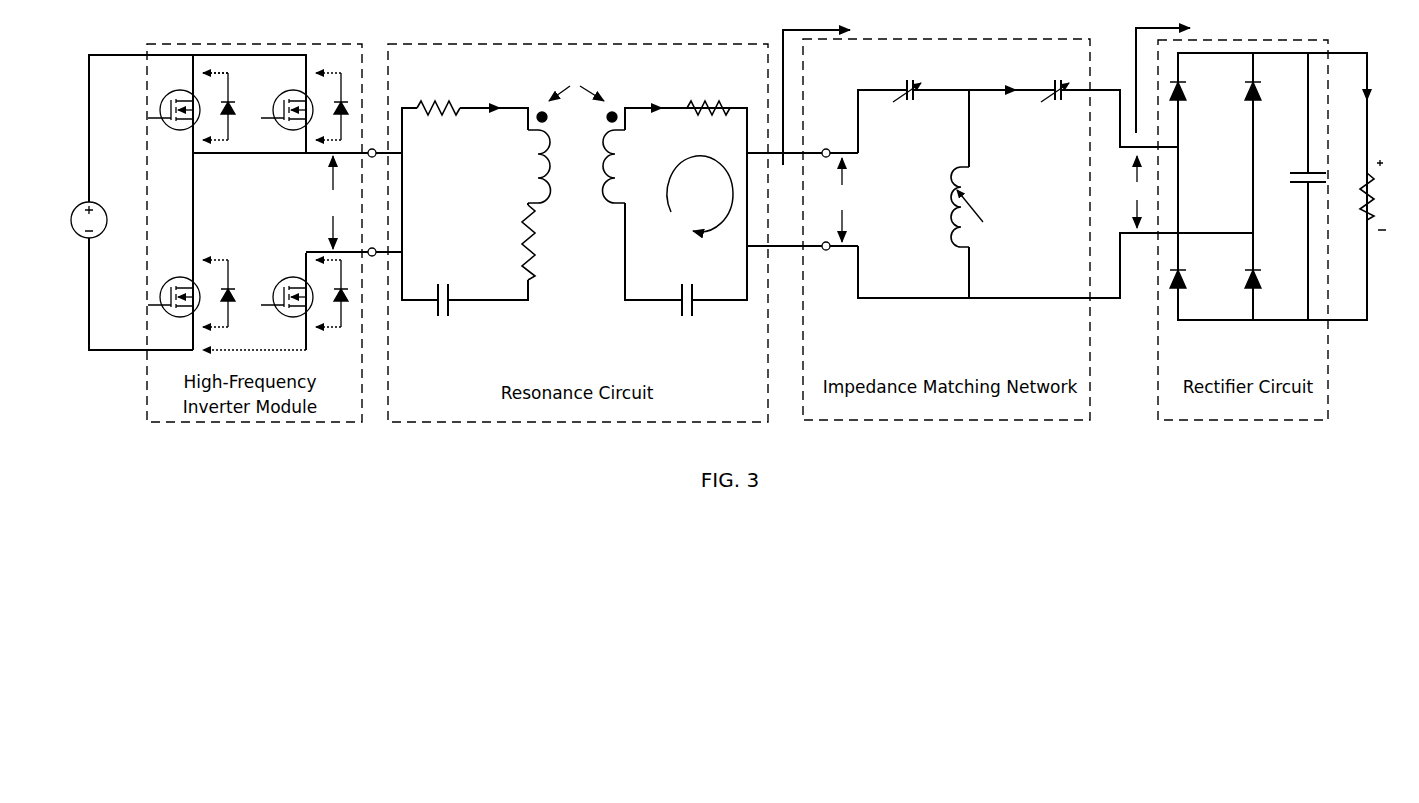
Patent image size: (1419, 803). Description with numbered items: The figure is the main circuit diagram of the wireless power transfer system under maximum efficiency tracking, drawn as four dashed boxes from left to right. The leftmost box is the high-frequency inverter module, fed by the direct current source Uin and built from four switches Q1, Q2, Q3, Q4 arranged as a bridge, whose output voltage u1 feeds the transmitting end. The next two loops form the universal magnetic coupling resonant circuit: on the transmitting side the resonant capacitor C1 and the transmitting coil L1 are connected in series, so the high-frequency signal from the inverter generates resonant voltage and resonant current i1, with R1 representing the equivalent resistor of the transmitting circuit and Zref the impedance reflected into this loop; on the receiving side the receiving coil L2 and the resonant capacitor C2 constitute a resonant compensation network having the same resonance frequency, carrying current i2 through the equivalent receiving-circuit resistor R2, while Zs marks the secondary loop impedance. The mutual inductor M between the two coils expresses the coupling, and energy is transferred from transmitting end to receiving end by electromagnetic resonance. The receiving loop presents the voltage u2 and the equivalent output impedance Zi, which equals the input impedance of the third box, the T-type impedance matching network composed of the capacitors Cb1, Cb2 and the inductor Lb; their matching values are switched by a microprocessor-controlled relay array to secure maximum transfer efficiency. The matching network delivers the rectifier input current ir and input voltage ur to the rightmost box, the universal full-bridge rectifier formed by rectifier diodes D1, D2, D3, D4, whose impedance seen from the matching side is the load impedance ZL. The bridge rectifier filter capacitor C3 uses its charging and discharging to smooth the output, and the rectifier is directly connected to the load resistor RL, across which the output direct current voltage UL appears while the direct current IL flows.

The DC input voltage source Uin is at (74, 220).
The inverter switch transistor Q1 is at (191, 101).
The inverter switch transistor Q2 is at (304, 101).
The inverter switch transistor Q3 is at (191, 290).
The inverter switch transistor Q4 is at (304, 290).
The inverter output voltage u1 is at (333, 202).
The equivalent resistor of the transmitting circuit R1 is at (438, 93).
The primary current i1 is at (490, 91).
The transmitting coil L1 is at (529, 166).
The reflected impedance Zref is at (550, 242).
The resonant capacitor C1 is at (442, 315).
The mutual inductor M is at (576, 85).
The receiving coil module L2 is at (626, 166).
The secondary current i2 is at (651, 91).
The equivalent resistor of the receiving circuit R2 is at (708, 93).
The secondary side impedance Zs is at (700, 194).
The resonant capacitor C2 is at (686, 315).
The equivalent output impedance of the resonant secondary circuit Zi is at (816, 84).
The secondary output voltage u2 is at (842, 200).
The capacitor Cb1 is at (907, 80).
The input current of the bridge rectifier ir is at (1006, 74).
The capacitor Cb2 is at (1055, 80).
The inductor Lb is at (980, 207).
The input voltage of the bridge rectifier ur is at (1135, 192).
The load impedance ZL is at (1163, 67).
The rectifier diode D1 is at (1191, 94).
The rectifier diode D2 is at (1266, 94).
The rectifier diode D3 is at (1191, 282).
The rectifier diode D4 is at (1266, 282).
The bridge rectifier filter capacitor C3 is at (1297, 179).
The load resistor RL is at (1355, 196).
The output direct current IL is at (1378, 103).
The output direct current voltage UL is at (1386, 195).